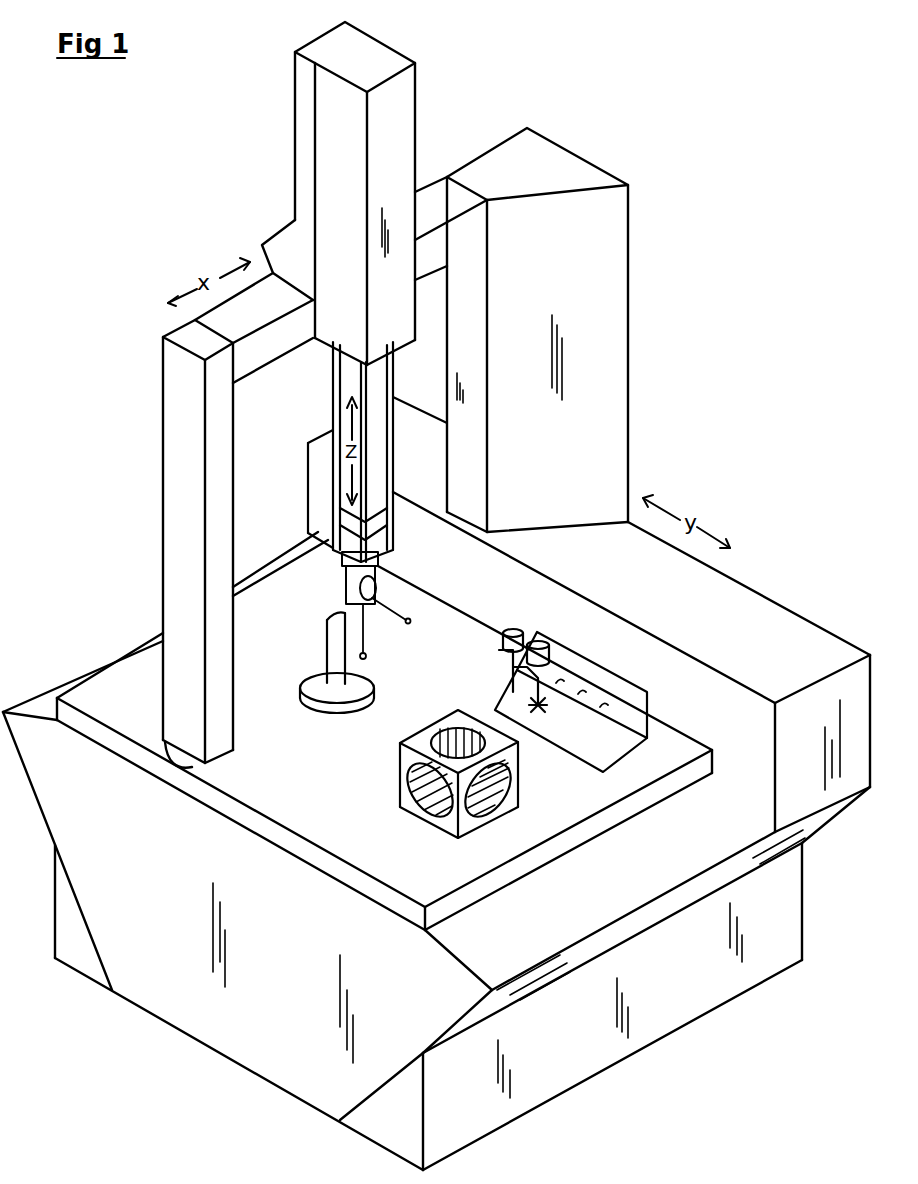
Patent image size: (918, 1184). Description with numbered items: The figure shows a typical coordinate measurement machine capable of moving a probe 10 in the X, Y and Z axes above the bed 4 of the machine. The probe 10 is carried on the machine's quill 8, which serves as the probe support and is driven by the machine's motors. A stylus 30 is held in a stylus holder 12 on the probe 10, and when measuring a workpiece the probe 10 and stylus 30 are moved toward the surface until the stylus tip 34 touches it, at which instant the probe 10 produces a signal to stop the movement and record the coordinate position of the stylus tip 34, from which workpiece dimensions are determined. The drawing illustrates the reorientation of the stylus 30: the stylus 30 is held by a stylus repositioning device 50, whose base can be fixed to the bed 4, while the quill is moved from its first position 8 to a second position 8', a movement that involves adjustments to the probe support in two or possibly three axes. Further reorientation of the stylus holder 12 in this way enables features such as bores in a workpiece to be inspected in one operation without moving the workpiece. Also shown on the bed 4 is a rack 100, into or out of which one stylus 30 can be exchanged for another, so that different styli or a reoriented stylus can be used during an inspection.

The bed 4 is at (132, 709).
The quill 8 is at (327, 452).
The second position of the quill 8' is at (410, 446).
The probe 10 is at (324, 573).
The stylus holder 12 is at (403, 596).
The stylus 30 is at (374, 626).
The stylus tip 34 is at (368, 658).
The stylus repositioning device 50 is at (311, 662).
The rack 100 is at (622, 755).